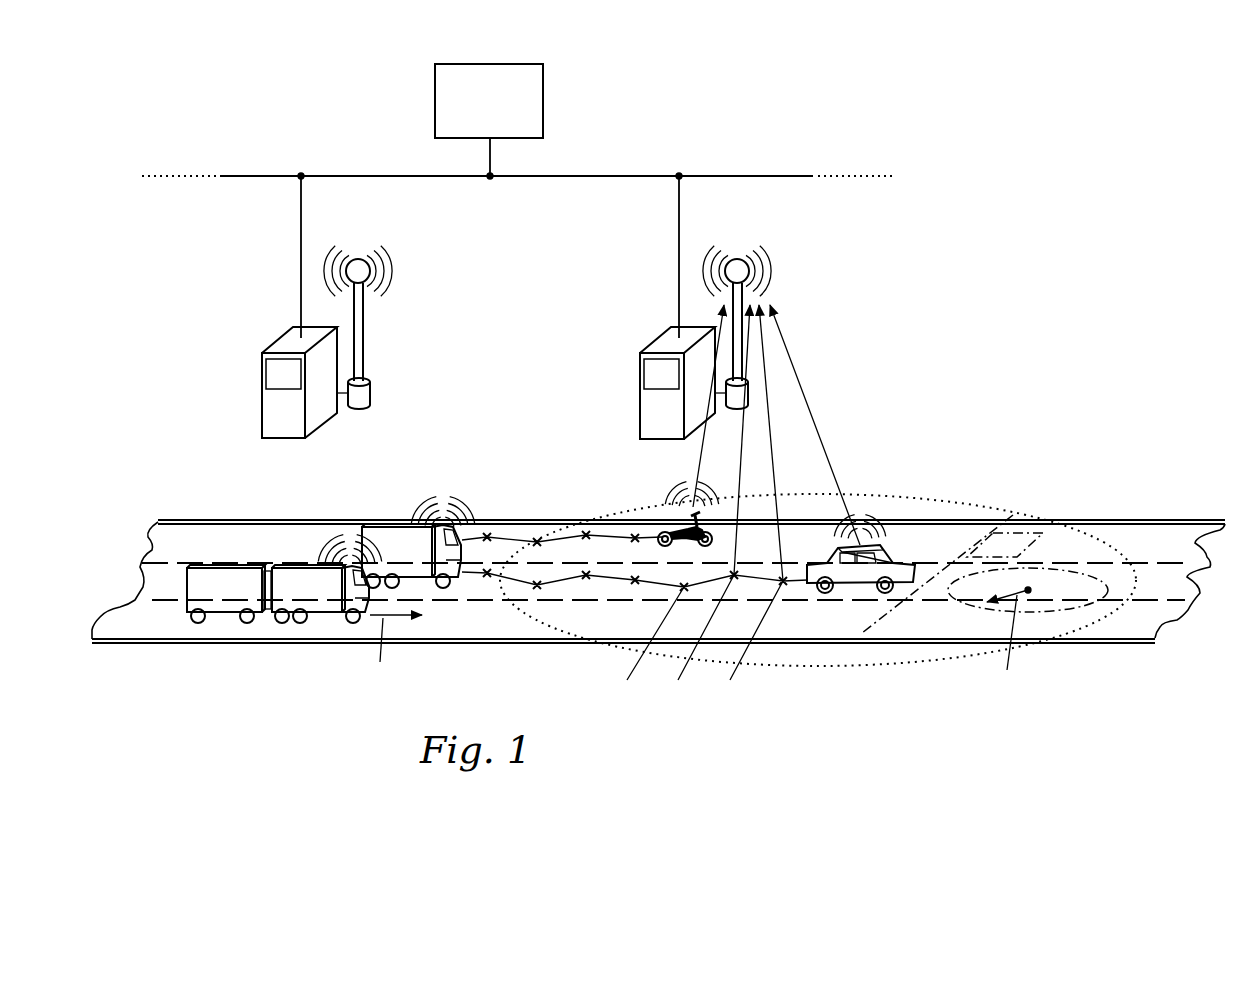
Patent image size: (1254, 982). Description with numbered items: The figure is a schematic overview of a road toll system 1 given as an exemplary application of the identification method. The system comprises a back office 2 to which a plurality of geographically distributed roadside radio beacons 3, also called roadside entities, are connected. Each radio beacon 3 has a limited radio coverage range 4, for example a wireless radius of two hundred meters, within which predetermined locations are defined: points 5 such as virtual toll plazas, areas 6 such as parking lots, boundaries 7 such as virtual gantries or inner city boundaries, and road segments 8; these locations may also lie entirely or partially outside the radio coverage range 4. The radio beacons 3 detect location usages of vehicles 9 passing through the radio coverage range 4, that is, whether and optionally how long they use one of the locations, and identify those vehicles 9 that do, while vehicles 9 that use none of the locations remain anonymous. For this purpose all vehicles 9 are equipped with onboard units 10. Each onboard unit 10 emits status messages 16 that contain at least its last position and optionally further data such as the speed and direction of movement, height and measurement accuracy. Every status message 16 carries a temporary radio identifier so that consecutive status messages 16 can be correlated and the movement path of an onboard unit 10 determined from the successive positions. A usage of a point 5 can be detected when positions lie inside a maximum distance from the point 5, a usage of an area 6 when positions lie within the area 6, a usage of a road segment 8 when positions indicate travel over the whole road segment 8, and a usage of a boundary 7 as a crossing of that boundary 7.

The road toll system 1 is at (1020, 309).
The back office 2 is at (547, 102).
The roadside radio beacon 3 is at (282, 419).
The radio coverage range 4 is at (963, 502).
The point 5 is at (1030, 593).
The area 6 is at (1005, 535).
The boundary 7 is at (882, 617).
The road segment 8 is at (1138, 612).
The vehicle 9 is at (398, 547).
The onboard unit 10 is at (860, 530).
The status message 16 is at (807, 403).